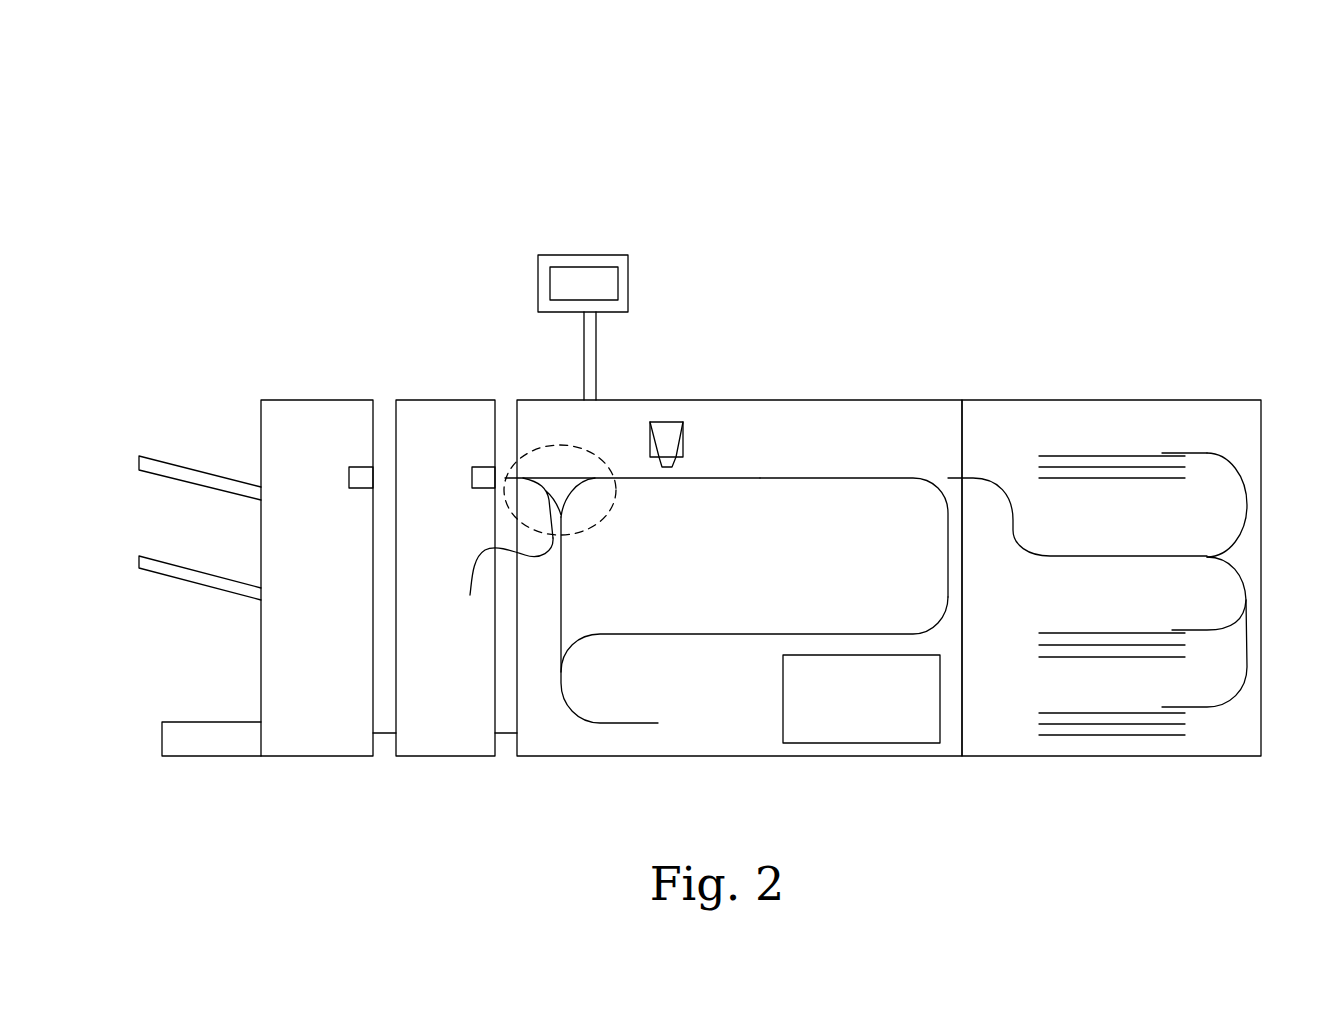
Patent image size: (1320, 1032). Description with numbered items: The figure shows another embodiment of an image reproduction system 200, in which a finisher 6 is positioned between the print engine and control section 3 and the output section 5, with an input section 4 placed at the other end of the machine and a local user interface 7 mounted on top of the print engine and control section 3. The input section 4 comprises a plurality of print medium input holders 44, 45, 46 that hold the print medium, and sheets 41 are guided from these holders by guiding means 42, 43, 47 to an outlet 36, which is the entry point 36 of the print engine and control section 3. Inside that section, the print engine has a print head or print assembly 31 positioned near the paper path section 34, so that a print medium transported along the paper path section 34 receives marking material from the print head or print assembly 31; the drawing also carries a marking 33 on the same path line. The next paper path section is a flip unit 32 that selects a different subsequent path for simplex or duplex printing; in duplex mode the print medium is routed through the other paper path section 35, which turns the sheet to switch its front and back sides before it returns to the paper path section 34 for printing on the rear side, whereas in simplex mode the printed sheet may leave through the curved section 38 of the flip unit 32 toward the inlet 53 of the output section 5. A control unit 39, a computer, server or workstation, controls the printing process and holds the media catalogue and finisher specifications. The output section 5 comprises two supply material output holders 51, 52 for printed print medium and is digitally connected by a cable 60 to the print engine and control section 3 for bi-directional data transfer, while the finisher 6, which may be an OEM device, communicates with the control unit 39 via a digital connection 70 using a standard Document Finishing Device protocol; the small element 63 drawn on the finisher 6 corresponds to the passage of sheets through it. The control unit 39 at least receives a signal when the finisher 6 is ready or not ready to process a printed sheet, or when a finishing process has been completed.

The image reproduction system 200 is at (405, 167).
The print engine and control section 3 is at (545, 410).
The input section 4 is at (1016, 405).
The output section 5 is at (322, 410).
The finisher 6 is at (445, 410).
The local user interface 7 is at (543, 258).
The print head or print assembly 31 is at (655, 420).
The flip unit 32 is at (598, 525).
The main conveying path 33 is at (740, 478).
The paper path section 34 is at (867, 478).
The paper path section 35 is at (832, 634).
The entry point 36 is at (960, 477).
The curved section 38 is at (507, 582).
The control unit 39 is at (805, 690).
The sheets 41 is at (1057, 453).
The guiding means 42 is at (1246, 500).
The guiding means 43 is at (1240, 592).
The print medium input holder 44 is at (1040, 635).
The print medium input holder 45 is at (1040, 720).
The print medium input holder 46 is at (1040, 465).
The guiding means 47 is at (1248, 670).
The supply material output holder 51 is at (178, 470).
The supply material output holder 52 is at (175, 578).
The inlet 53 is at (350, 487).
The cable 60 is at (383, 737).
The relay roller 63 is at (475, 487).
The digital connection 70 is at (500, 737).